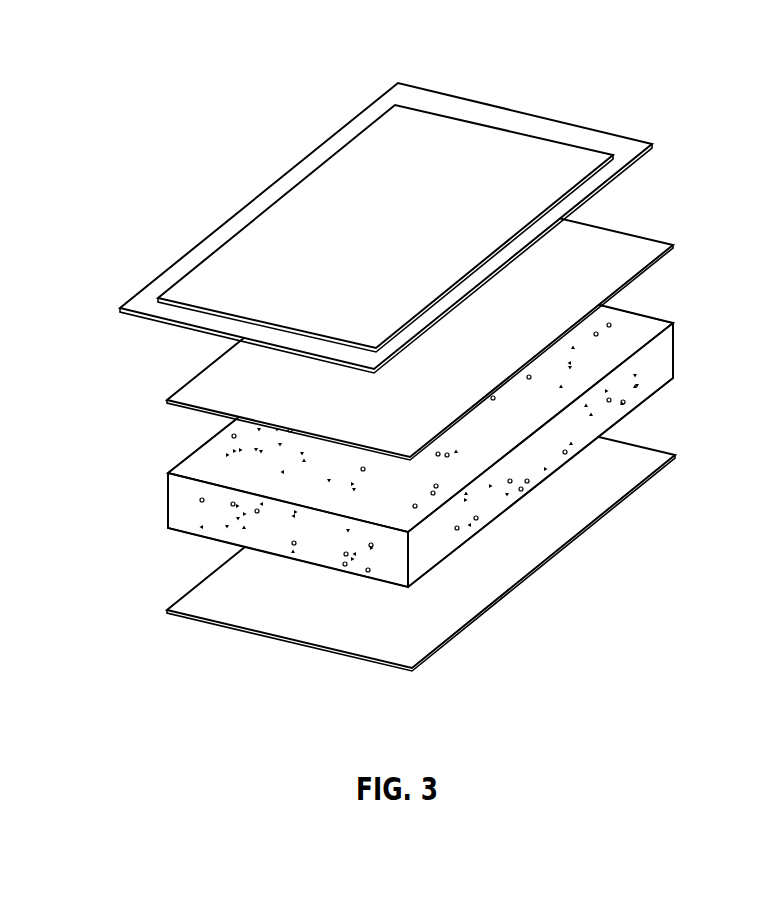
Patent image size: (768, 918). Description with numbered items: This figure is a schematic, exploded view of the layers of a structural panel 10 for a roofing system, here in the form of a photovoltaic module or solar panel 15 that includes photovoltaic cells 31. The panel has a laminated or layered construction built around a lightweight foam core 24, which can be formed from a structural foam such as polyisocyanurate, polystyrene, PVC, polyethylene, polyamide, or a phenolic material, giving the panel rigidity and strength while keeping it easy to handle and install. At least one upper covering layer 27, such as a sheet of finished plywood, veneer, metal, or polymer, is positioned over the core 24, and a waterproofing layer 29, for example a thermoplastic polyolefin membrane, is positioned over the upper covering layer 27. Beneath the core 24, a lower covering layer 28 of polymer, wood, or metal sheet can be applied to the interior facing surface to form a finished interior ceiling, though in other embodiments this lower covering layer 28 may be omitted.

The structural panel 10 is at (428, 387).
The photovoltaic module or solar panel 15 is at (446, 470).
The foam core 24 is at (667, 348).
The upper covering layer 27 is at (638, 248).
The lower covering layer 28 is at (192, 607).
The waterproofing layer 29 is at (390, 228).
The photovoltaic cells 31 is at (328, 202).